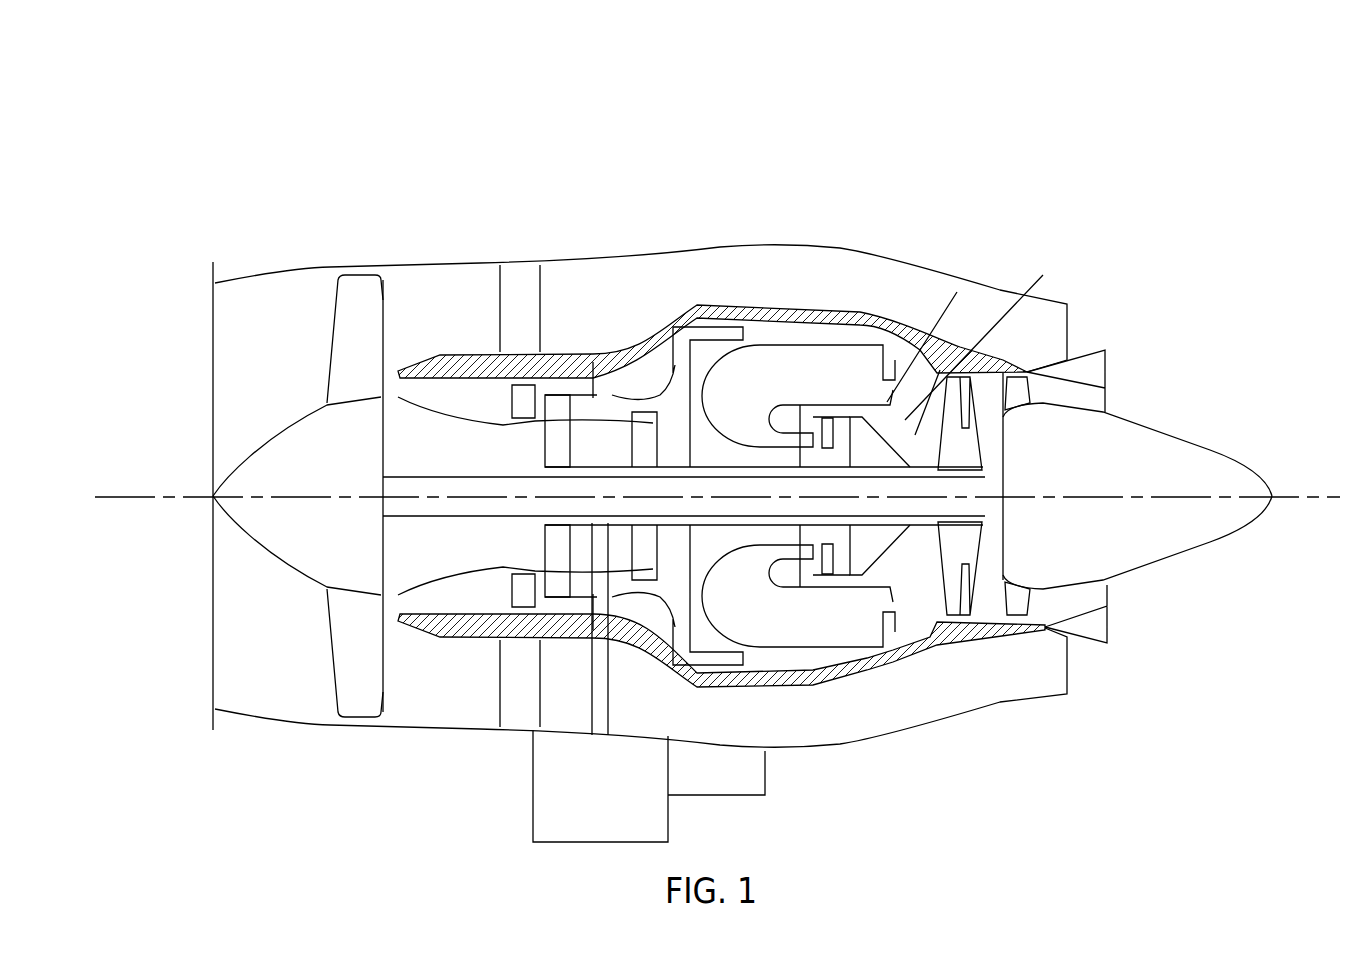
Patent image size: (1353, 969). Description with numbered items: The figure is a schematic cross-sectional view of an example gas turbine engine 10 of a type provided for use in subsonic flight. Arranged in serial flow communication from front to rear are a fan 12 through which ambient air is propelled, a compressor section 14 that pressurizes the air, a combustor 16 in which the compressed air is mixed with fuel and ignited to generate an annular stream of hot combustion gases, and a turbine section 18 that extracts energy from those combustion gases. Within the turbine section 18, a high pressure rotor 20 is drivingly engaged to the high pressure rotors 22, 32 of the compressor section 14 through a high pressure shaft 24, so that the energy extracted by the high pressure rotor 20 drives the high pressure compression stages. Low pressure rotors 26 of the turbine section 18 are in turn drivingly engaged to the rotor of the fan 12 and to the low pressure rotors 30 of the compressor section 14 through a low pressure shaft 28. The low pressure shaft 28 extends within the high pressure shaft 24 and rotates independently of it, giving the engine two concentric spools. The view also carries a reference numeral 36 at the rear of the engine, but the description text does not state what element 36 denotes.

The gas turbine engine 10 is at (962, 104).
The fan section 12 is at (353, 640).
The low pressure compressor 14 is at (592, 400).
The combustor 16 is at (795, 365).
The turbine section 18 is at (909, 605).
The high pressure turbine 20 is at (937, 333).
The high pressure compressor 22 is at (657, 417).
The fuel nozzle 24 is at (803, 405).
The low pressure turbine 26 is at (1043, 278).
The low pressure shaft 28 is at (440, 517).
The high pressure shaft 30 is at (555, 415).
The bypass duct 32 is at (295, 377).
The exhaust nozzle 36 is at (1100, 393).